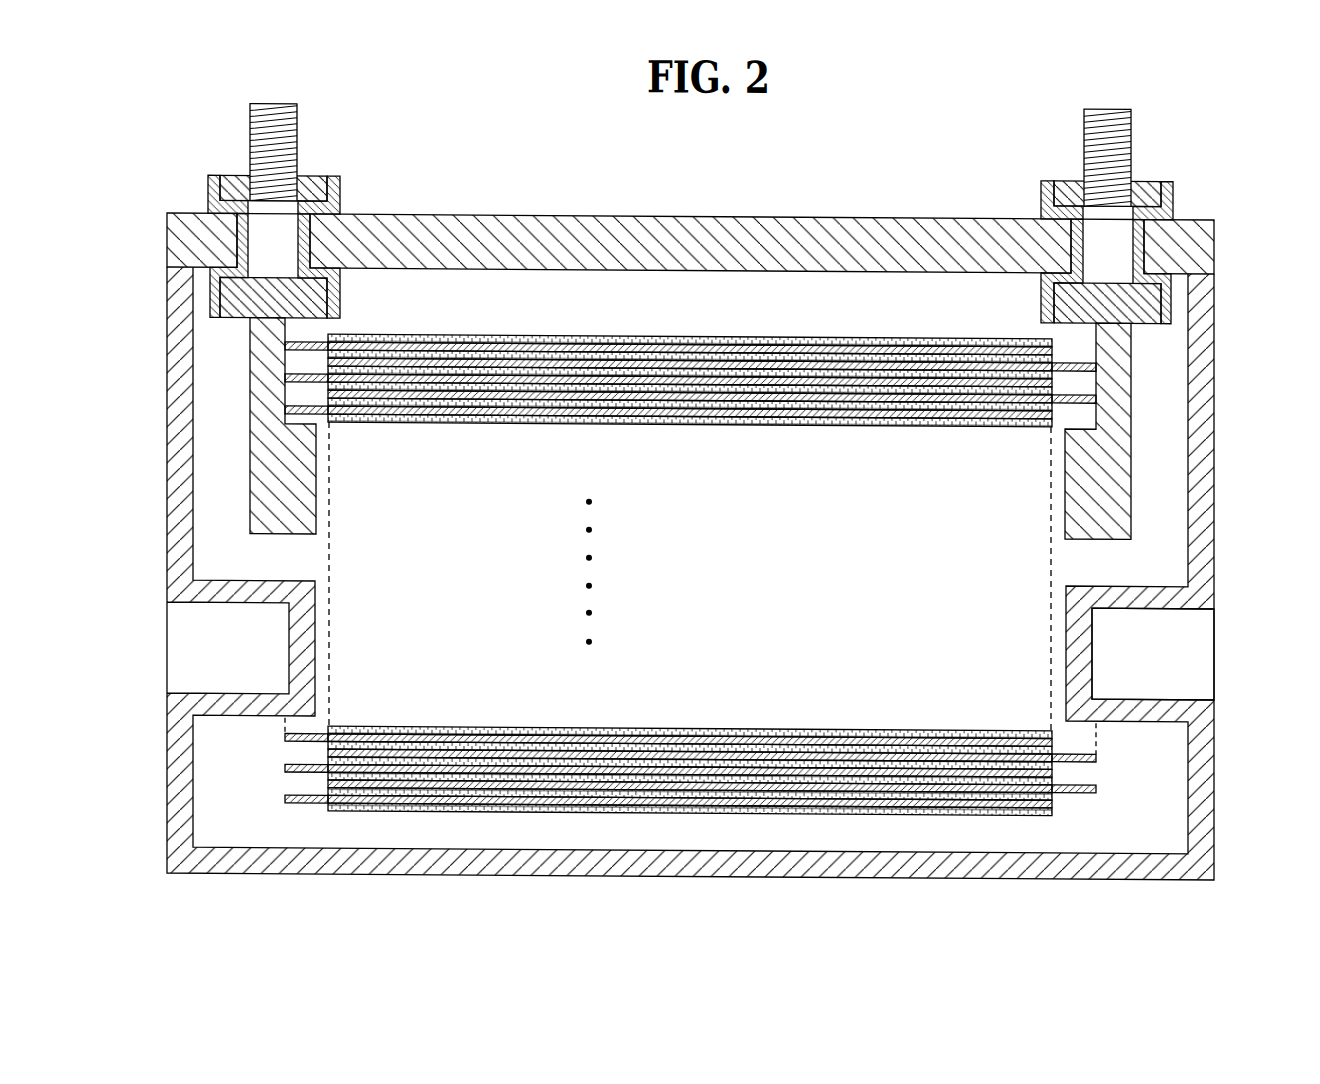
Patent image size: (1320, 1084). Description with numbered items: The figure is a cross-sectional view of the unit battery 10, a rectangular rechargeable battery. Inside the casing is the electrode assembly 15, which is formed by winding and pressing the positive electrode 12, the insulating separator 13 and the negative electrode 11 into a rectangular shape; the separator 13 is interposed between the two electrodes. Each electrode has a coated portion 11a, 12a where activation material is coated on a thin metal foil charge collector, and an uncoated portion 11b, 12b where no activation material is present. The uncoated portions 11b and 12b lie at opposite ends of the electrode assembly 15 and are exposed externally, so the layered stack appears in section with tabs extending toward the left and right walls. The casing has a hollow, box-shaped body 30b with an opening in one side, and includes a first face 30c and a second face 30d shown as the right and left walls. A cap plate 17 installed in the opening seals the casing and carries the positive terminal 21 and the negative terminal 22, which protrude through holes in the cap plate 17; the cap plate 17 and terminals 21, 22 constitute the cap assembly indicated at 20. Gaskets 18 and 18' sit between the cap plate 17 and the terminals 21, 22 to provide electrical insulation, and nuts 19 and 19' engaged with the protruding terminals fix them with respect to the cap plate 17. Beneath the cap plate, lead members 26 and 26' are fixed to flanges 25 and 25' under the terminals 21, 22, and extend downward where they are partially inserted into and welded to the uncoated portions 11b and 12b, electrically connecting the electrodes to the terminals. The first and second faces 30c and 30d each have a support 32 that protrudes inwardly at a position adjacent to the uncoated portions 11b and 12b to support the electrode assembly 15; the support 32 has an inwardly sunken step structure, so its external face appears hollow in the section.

The unit battery 10 is at (671, 142).
The negative electrode 11 is at (618, 811).
The coated portion 11a is at (673, 799).
The uncoated portion 11b is at (303, 802).
The positive electrode 12 is at (398, 793).
The coated portion 12a is at (470, 781).
The uncoated portion 12b is at (1060, 787).
The insulating separator 13 is at (563, 806).
The electrode assembly 15 is at (714, 707).
The cap plate 17 is at (515, 211).
The gasket 18 is at (302, 243).
The gasket 18' is at (1139, 246).
The nut 19 is at (281, 164).
The nut 19' is at (1115, 168).
The cap assembly 20 is at (736, 186).
The positive terminal 21 is at (272, 103).
The negative terminal 22 is at (1107, 103).
The flange 25 is at (214, 298).
The flange 25' is at (1169, 304).
The lead member 26 is at (209, 425).
The lead member 26' is at (1175, 431).
The body 30b is at (1233, 410).
The first face 30c is at (1214, 498).
The second face 30d is at (167, 498).
The support 32 is at (1135, 715).